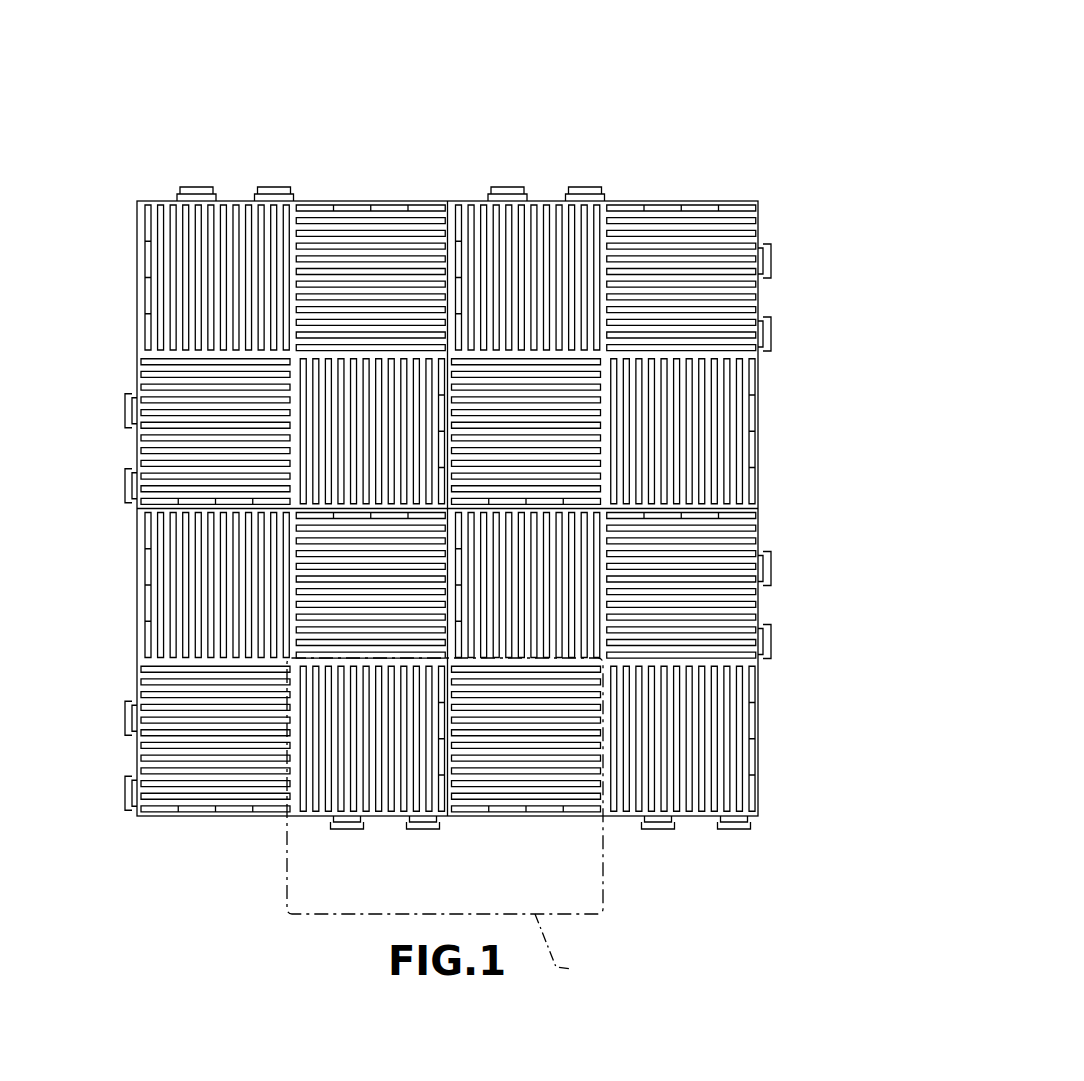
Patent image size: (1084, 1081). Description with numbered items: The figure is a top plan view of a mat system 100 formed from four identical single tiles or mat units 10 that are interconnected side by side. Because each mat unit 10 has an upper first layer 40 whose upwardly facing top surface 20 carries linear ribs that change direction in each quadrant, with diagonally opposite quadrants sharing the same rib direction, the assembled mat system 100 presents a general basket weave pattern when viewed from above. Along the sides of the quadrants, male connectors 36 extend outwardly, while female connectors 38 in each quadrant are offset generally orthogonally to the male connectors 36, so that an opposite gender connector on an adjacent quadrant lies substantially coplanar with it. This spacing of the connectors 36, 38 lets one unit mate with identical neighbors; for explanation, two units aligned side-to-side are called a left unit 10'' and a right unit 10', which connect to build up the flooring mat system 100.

The mat system 100 is at (619, 61).
The mat unit 10 is at (447, 459).
The right unit 10' is at (604, 715).
The left unit 10'' is at (293, 715).
The top surface 20 is at (442, 820).
The upper first layer 40 is at (256, 741).
The male connectors 36 is at (196, 186).
The female connectors 38 is at (422, 205).